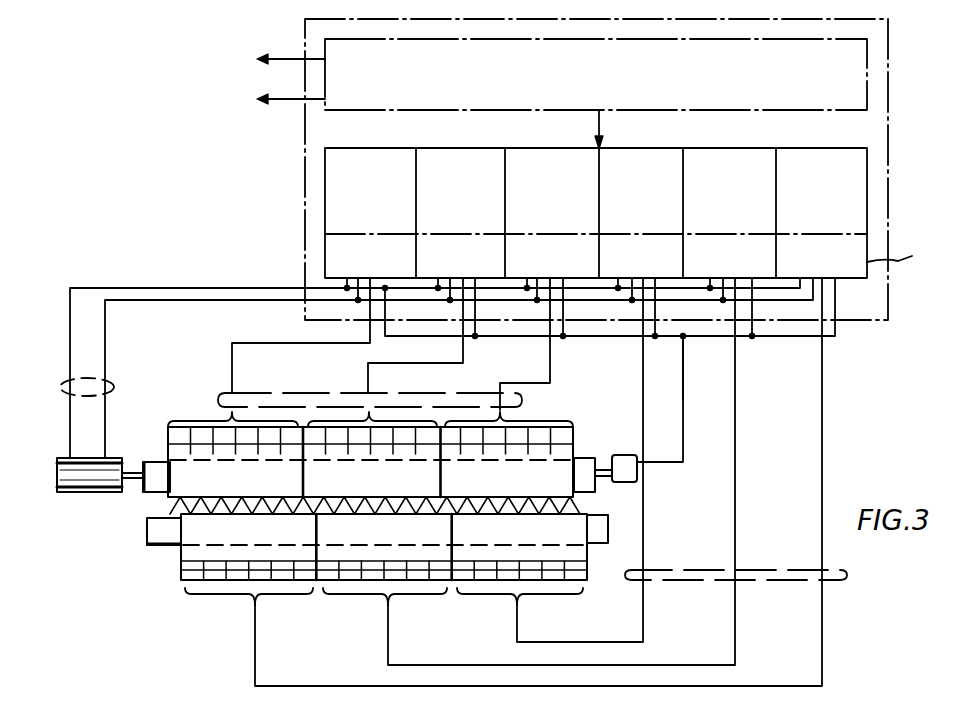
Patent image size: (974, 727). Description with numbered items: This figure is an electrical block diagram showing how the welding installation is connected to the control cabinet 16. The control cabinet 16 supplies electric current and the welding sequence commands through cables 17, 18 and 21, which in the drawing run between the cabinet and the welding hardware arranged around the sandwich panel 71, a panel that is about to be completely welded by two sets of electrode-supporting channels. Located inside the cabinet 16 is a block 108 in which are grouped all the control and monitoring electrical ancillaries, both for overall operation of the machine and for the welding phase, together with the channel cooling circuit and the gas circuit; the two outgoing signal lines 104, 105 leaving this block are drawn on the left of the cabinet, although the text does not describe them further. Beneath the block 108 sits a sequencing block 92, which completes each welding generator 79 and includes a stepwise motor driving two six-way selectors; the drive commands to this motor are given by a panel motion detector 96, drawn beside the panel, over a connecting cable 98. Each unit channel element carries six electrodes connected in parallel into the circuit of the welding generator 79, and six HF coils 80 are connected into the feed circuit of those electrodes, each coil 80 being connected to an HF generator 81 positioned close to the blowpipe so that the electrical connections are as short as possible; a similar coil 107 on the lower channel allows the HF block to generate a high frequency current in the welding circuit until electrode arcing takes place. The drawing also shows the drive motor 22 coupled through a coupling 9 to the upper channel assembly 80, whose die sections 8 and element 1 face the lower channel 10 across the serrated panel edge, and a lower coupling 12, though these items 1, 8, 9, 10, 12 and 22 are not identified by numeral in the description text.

The die element 1 is at (512, 495).
The upper die section 8 is at (472, 497).
The coupling 9 is at (178, 490).
The lower die 10 is at (374, 567).
The lower coupling 12 is at (155, 532).
The control cabinet 16 is at (888, 180).
The cable 17 is at (322, 393).
The cable 18 is at (60, 387).
The cable 21 is at (700, 568).
The drive motor 22 is at (90, 497).
The sandwich panel 71 is at (177, 507).
The welding generator 79 is at (900, 247).
The HF coil 80 is at (364, 496).
The HF generator 81 is at (180, 437).
The sequencing block 92 is at (325, 210).
The panel motion detector 96 is at (625, 480).
The connecting cable 98 is at (683, 393).
The output signal 104 is at (273, 58).
The output signal 105 is at (273, 98).
The coil 107 is at (185, 567).
The block 108 is at (867, 80).